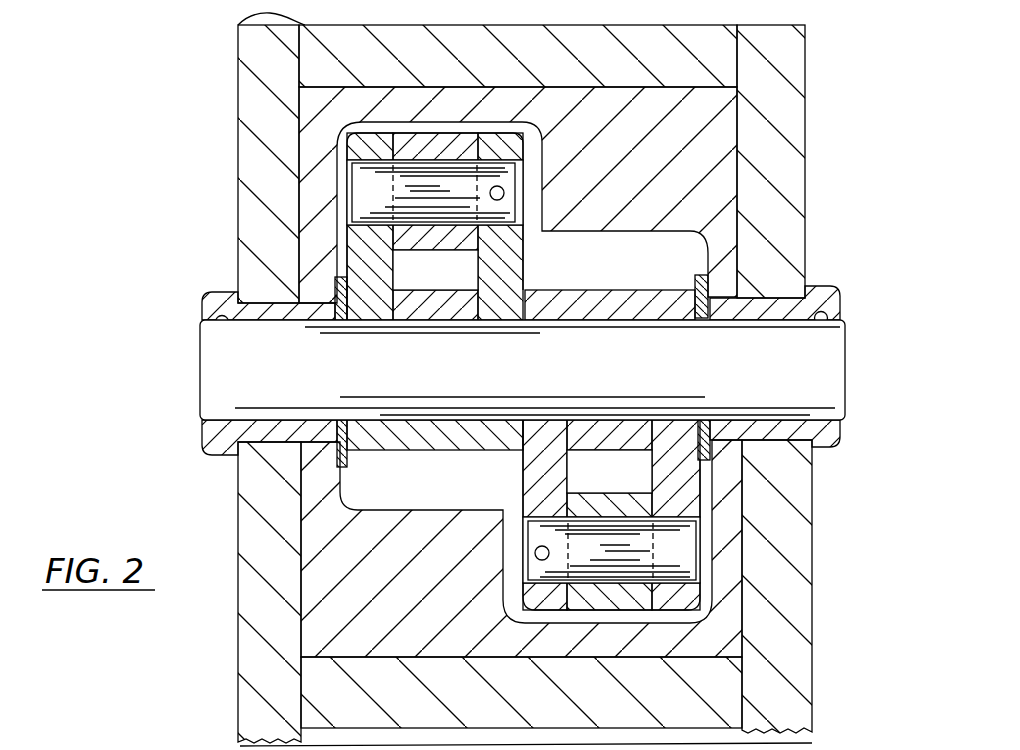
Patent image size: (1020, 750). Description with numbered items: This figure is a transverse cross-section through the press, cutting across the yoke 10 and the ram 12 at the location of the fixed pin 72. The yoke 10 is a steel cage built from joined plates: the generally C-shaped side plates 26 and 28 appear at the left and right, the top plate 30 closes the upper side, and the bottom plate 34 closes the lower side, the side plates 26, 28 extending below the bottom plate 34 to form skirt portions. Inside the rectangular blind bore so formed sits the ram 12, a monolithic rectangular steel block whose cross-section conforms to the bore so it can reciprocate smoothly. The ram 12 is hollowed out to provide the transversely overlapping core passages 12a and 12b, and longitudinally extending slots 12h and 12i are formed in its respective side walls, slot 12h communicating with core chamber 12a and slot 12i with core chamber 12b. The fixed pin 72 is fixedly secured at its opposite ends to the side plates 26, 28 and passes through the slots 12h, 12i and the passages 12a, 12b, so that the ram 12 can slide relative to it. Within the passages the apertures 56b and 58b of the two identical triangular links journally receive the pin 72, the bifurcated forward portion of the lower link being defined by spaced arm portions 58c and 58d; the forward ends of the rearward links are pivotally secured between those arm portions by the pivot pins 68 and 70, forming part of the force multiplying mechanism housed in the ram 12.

The yoke 10 is at (847, 74).
The ram 12 is at (523, 353).
The core passage 12a is at (418, 127).
The core passage 12b is at (656, 234).
The slot 12h is at (312, 304).
The slot 12i is at (760, 299).
The side plate 26 is at (238, 114).
The side plate 28 is at (805, 128).
The top plate 30 is at (238, 26).
The bottom plate 34 is at (542, 704).
The aperture 56b is at (432, 414).
The aperture 58b is at (665, 320).
The arm portion 58c is at (358, 245).
The arm portion 58d is at (525, 247).
The pivot pin 68 is at (435, 226).
The pivot pin 70 is at (611, 515).
The fixed pin 72 is at (228, 367).